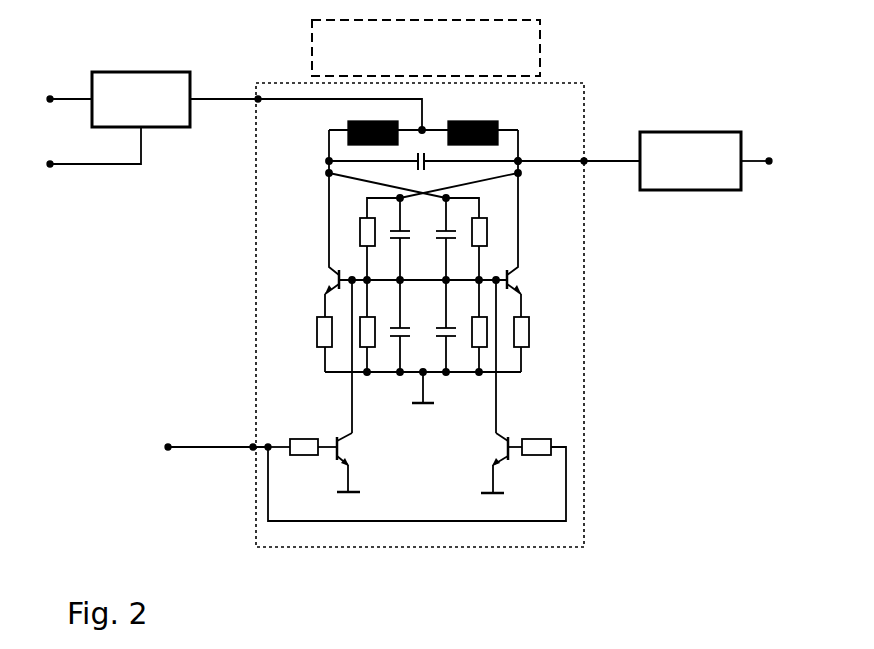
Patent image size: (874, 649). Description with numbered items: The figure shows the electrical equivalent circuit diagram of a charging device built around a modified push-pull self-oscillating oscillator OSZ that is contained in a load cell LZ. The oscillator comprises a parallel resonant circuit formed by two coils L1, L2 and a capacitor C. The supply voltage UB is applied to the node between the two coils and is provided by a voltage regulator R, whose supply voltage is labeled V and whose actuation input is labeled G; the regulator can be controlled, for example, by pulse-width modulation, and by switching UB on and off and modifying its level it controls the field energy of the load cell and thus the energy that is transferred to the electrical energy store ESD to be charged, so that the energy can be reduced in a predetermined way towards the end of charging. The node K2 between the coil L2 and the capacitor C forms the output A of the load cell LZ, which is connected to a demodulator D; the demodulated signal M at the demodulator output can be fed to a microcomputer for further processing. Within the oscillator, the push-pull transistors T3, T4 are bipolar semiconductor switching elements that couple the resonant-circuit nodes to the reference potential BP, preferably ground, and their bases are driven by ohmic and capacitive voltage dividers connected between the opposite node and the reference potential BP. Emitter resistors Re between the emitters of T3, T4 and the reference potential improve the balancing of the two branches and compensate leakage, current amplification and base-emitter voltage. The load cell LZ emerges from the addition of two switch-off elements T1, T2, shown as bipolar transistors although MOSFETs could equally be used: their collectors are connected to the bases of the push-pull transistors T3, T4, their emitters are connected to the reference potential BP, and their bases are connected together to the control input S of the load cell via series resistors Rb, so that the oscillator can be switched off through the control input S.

The supply voltage of the voltage regulator V is at (57, 99).
The actuation input of the voltage regulator G is at (81, 150).
The voltage regulator R is at (141, 99).
The supply voltage UB is at (306, 103).
The electrical energy store ESD is at (398, 60).
The load cell LZ is at (280, 278).
The coil L1 is at (348, 124).
The coil L2 is at (498, 124).
The capacitor C is at (426, 156).
The node K2 is at (519, 161).
The output of the load cell A is at (579, 148).
The demodulator D is at (690, 161).
The demodulated signal M is at (769, 161).
The self-oscillating oscillator OSZ is at (560, 241).
The semiconductor switching element T3 is at (332, 282).
The semiconductor switching element T4 is at (513, 280).
The emitter resistors Re is at (421, 333).
The series resistors Rb is at (409, 436).
The switch-off element T1 is at (359, 449).
The switch-off element T2 is at (484, 449).
The reference potential BP is at (420, 378).
The control input of the load cell S is at (353, 479).